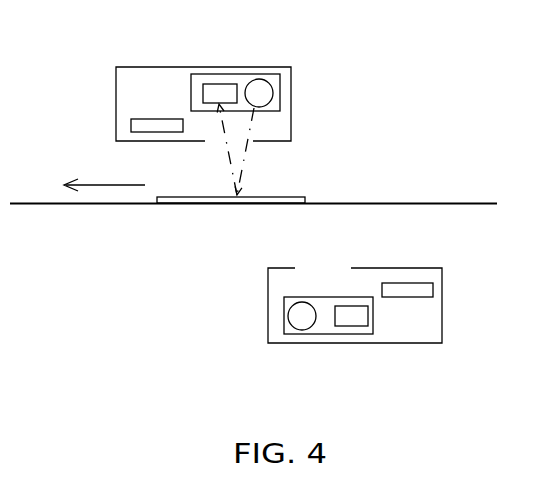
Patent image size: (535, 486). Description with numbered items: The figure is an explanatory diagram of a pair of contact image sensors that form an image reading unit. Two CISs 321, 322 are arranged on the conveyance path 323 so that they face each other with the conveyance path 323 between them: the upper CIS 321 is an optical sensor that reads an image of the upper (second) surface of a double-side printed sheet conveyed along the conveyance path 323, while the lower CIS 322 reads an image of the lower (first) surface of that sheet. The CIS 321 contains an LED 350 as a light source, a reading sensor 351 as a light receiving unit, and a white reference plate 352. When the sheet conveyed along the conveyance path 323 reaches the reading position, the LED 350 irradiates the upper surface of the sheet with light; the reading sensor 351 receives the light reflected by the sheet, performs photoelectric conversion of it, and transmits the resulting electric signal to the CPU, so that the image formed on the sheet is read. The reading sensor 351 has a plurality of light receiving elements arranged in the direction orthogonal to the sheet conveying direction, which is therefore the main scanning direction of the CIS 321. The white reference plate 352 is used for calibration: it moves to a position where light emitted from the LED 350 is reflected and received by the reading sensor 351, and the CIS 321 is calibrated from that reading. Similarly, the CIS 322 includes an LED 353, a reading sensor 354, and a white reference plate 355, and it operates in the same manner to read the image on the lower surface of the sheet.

The CIS 321 is at (152, 67).
The CIS 322 is at (400, 343).
The conveyance path 323 is at (458, 202).
The LED 350 is at (267, 80).
The reading sensor 351 is at (223, 84).
The white reference plate 352 is at (131, 120).
The LED 353 is at (298, 334).
The reading sensor 354 is at (350, 326).
The white reference plate 355 is at (433, 292).